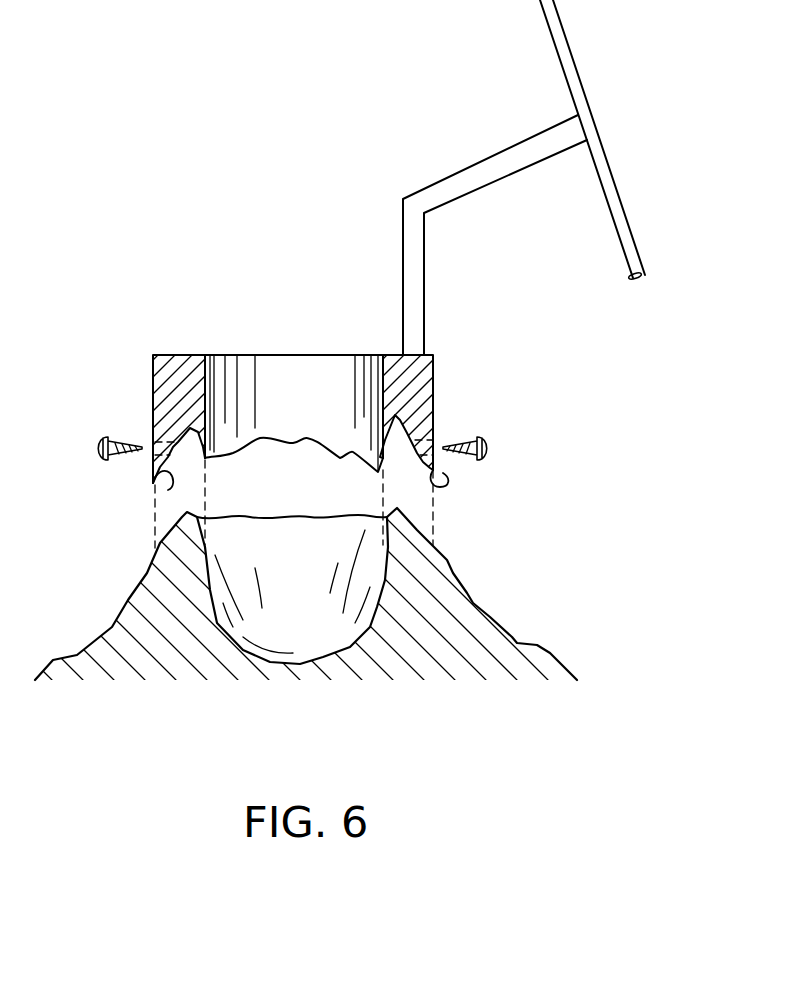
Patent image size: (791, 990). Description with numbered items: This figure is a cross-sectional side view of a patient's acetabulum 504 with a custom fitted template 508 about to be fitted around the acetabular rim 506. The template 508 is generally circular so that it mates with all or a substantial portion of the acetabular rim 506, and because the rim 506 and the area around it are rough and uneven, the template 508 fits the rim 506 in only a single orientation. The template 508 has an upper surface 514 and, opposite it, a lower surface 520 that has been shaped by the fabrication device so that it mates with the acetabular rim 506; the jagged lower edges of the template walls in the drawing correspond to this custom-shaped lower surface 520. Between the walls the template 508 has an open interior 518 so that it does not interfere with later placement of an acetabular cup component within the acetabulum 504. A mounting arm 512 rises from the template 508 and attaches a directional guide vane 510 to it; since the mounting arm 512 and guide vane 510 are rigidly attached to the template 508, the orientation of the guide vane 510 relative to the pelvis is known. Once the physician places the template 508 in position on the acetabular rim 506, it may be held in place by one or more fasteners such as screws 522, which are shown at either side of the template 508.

The acetabulum 504 is at (238, 588).
The acetabular rim 506 is at (276, 519).
The custom fitted template 508 is at (257, 342).
The directional guide vane 510 is at (610, 170).
The mounting arm 512 is at (425, 313).
The upper surface 514 is at (175, 355).
The open interior 518 is at (328, 372).
The lower surface 520 is at (168, 490).
The screws 522 is at (122, 440).